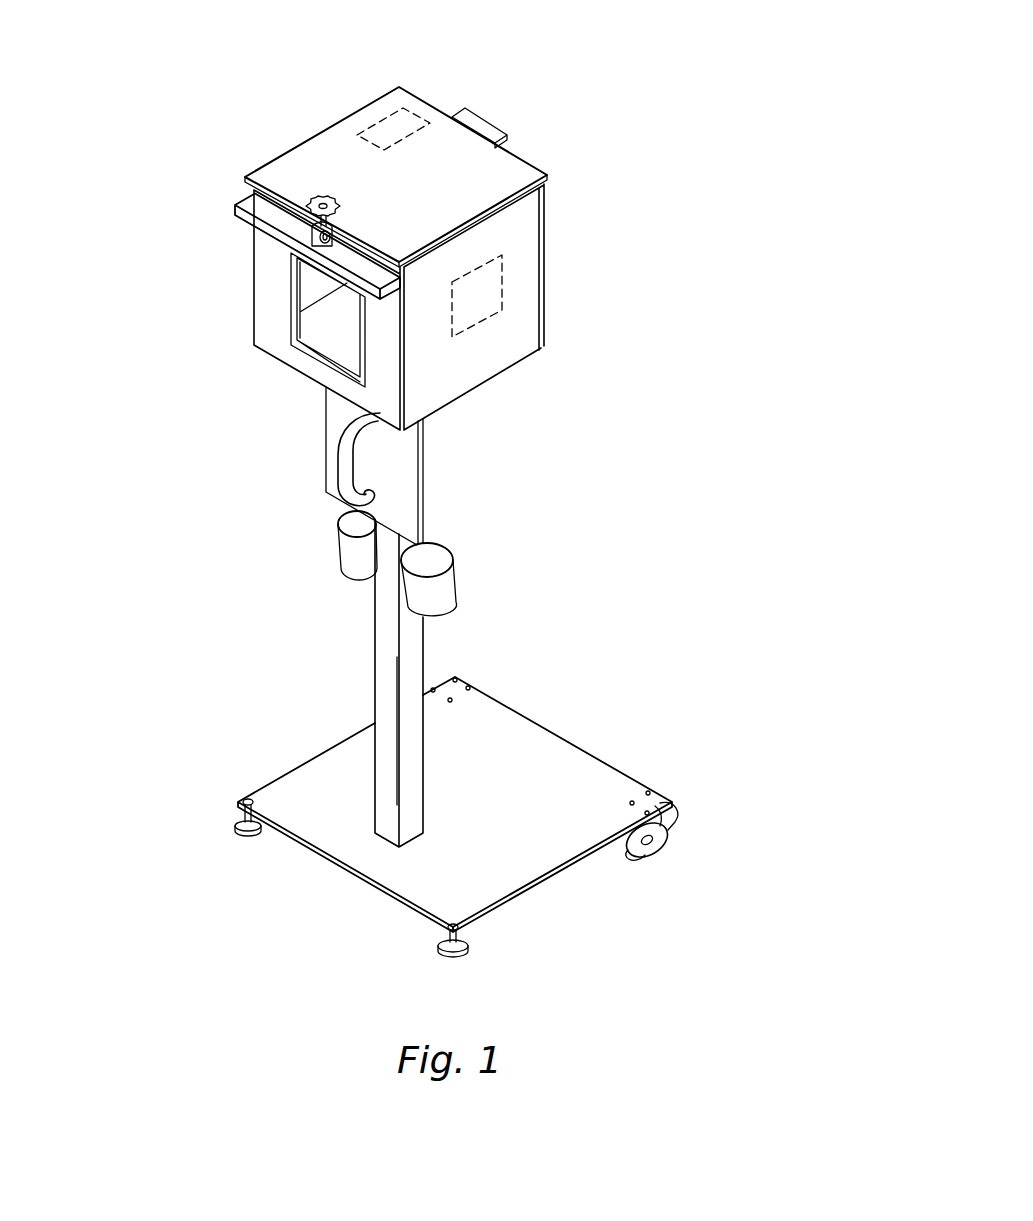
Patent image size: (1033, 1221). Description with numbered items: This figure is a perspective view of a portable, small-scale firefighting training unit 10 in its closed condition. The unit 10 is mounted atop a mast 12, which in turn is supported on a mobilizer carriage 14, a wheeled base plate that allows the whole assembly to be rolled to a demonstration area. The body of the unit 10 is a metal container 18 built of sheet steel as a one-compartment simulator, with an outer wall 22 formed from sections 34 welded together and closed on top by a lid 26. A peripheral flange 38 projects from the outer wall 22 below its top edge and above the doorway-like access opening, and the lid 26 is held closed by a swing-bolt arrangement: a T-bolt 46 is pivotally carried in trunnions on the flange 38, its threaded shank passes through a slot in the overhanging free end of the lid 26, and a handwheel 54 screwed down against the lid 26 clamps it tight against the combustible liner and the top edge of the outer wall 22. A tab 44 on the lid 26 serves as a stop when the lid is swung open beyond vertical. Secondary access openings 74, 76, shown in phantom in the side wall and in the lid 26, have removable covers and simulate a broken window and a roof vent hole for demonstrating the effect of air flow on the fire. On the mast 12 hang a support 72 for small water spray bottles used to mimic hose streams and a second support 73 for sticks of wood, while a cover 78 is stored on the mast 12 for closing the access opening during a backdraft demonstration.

The firefighting training unit 10 is at (598, 257).
The mast 12 is at (425, 630).
The mobilizer carriage 14 is at (598, 758).
The metal container 18 is at (549, 303).
The outer wall 22 is at (272, 343).
The lid 26 is at (337, 142).
The sections 34 is at (387, 390).
The peripheral flange 38 is at (242, 225).
The tab 44 is at (490, 117).
The T-bolt 46 is at (348, 227).
The handwheel 54 is at (316, 194).
The support 72 is at (338, 543).
The second support 73 is at (457, 568).
The secondary access opening 74 is at (490, 317).
The secondary access opening 76 is at (407, 108).
The cover 78 is at (425, 497).